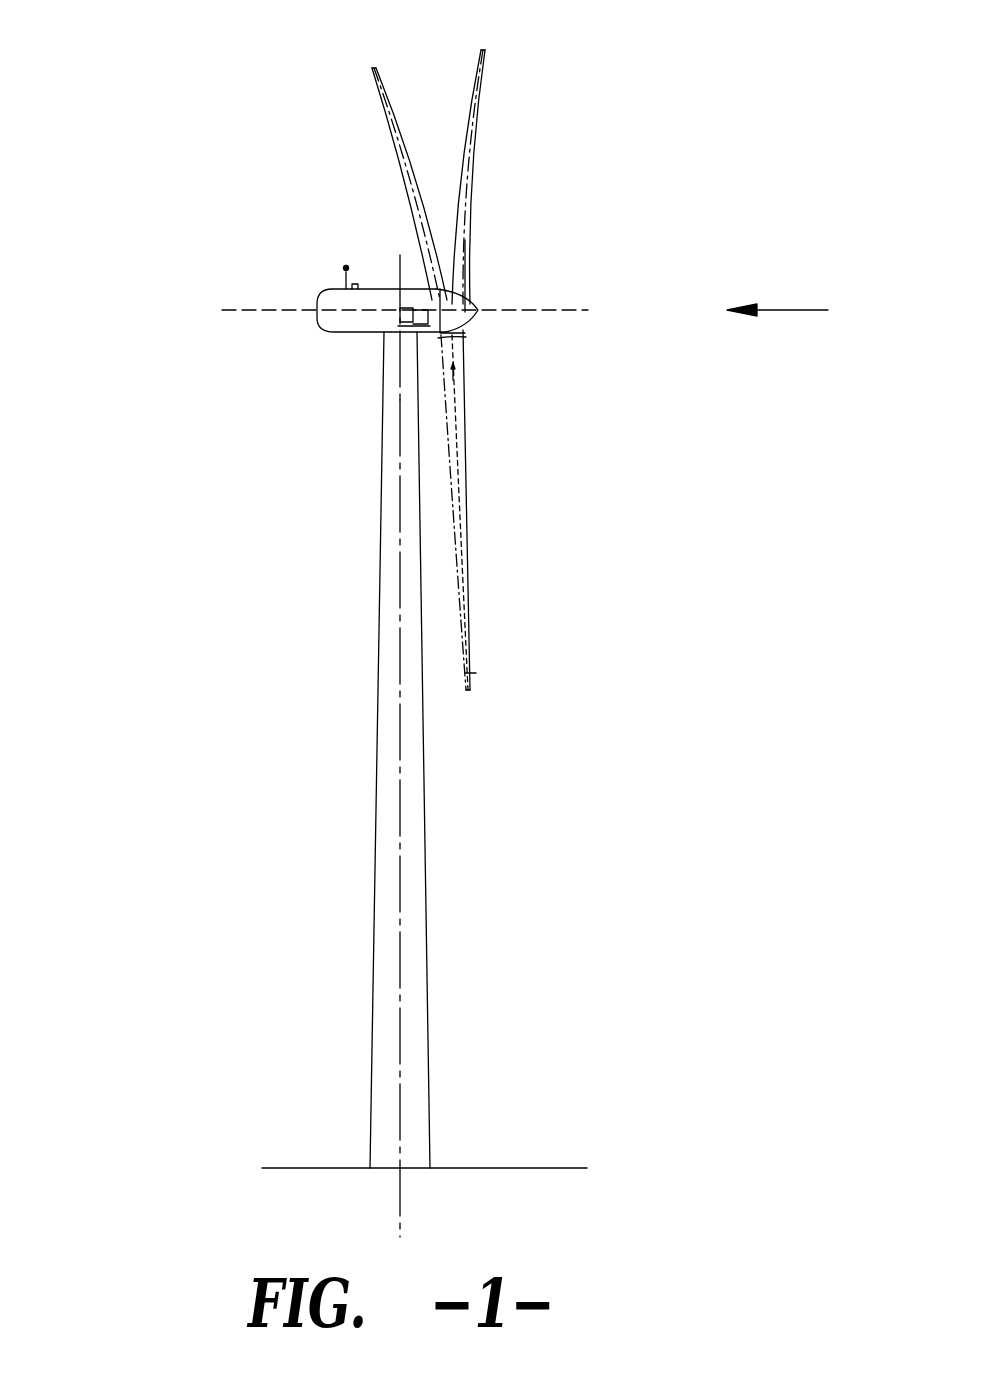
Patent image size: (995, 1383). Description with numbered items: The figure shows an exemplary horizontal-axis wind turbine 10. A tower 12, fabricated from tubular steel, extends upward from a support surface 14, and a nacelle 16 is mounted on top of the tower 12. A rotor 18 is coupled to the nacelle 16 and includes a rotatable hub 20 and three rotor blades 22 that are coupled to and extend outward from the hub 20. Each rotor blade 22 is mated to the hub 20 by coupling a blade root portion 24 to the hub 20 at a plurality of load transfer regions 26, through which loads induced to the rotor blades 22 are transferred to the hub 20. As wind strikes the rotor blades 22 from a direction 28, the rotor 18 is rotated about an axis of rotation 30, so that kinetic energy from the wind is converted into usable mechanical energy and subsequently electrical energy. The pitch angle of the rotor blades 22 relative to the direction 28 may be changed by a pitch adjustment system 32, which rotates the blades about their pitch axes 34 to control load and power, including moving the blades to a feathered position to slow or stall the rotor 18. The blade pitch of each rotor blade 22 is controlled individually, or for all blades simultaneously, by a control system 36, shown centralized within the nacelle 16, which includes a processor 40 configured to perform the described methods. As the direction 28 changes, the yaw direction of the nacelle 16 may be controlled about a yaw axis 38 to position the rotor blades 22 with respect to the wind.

The wind turbine 10 is at (133, 72).
The tower 12 is at (373, 918).
The support surface 14 is at (323, 1166).
The nacelle 16 is at (350, 333).
The rotor 18 is at (490, 205).
The rotatable hub 20 is at (470, 300).
The rotor blade 22 is at (393, 148).
The blade root portion 24 is at (463, 425).
The load transfer regions 26 is at (463, 334).
The direction 28 is at (803, 308).
The axis of rotation 30 is at (545, 312).
The pitch adjustment system 32 is at (460, 371).
The pitch axes 34 is at (372, 68).
The control system 36 is at (399, 361).
The yaw axis 38 is at (401, 800).
The processor 40 is at (415, 273).